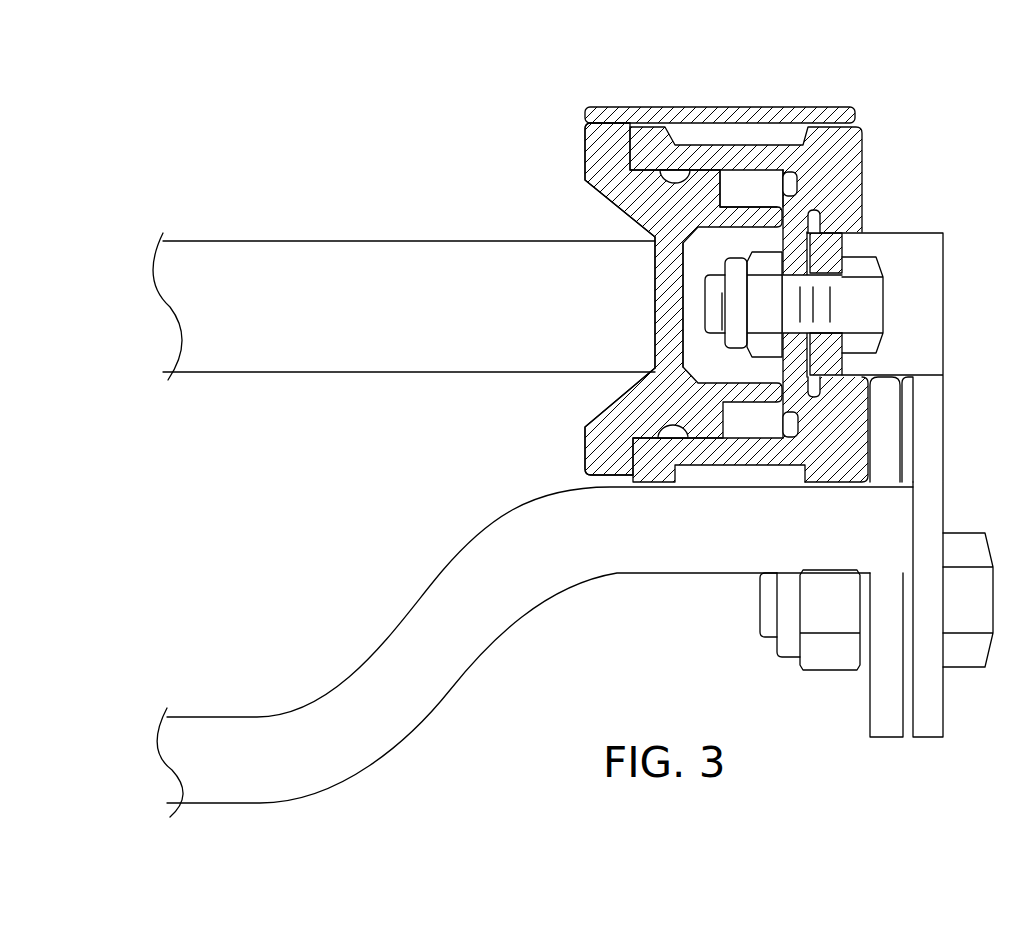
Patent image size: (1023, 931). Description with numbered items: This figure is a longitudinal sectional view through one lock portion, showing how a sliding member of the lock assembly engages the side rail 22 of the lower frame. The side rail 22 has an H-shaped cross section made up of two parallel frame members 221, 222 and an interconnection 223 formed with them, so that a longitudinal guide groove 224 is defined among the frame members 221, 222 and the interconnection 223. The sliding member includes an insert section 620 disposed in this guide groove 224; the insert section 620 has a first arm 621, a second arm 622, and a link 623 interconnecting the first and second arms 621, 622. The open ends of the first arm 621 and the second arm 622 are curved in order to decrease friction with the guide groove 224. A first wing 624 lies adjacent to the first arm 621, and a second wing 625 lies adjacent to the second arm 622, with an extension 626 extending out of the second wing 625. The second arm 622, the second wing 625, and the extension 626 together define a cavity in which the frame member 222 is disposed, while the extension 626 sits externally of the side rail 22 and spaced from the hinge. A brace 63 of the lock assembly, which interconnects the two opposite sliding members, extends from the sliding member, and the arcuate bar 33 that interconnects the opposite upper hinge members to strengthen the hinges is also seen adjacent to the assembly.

The side rail 22 is at (871, 152).
The arcuate bar 33 is at (410, 632).
The brace 63 is at (273, 263).
The frame member 221 is at (707, 452).
The frame member 222 is at (702, 153).
The interconnection 223 is at (820, 243).
The longitudinal guide groove 224 is at (797, 181).
The insert section 620 is at (638, 268).
The first arm 621 is at (797, 484).
The second arm 622 is at (748, 205).
The link 623 is at (654, 306).
The first wing 624 is at (580, 452).
The second wing 625 is at (584, 144).
The extension 626 is at (788, 107).